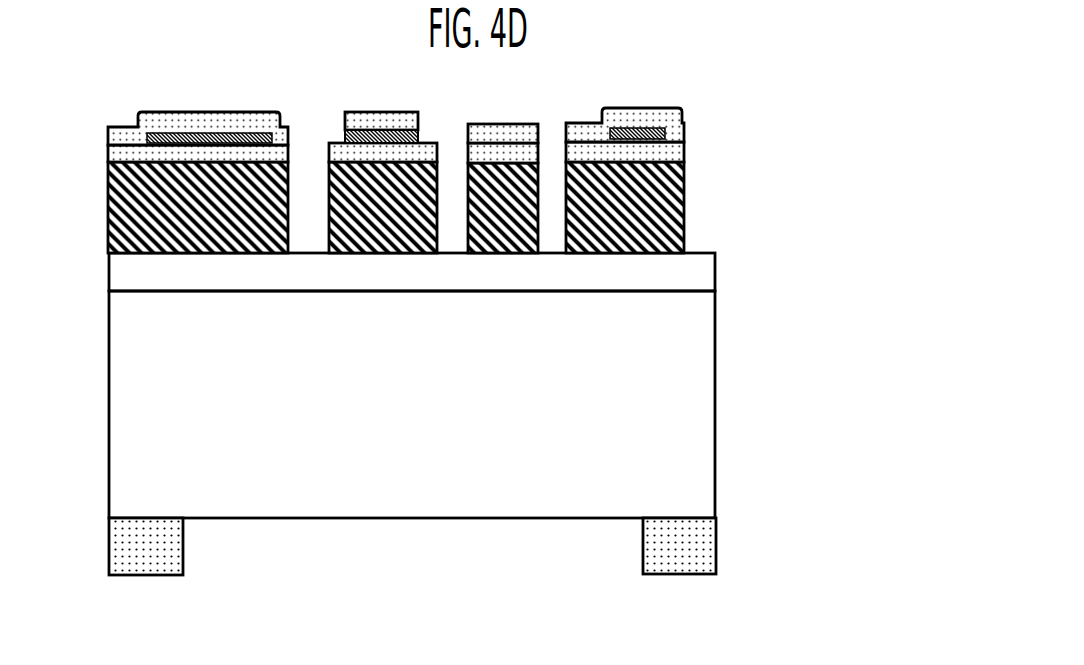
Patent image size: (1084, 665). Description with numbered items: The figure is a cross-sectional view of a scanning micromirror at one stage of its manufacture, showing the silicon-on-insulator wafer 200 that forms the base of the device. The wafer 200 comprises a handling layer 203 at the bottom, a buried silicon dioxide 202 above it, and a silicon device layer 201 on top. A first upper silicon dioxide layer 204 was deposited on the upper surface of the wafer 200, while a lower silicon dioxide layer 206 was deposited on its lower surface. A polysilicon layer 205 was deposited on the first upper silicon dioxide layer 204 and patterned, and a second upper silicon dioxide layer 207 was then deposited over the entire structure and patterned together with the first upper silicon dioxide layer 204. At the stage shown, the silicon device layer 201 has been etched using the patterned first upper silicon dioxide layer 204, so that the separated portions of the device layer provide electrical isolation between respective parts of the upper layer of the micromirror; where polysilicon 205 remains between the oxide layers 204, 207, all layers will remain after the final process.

The silicon-on-insulator (SOI) wafer 200 is at (513, 349).
The silicon device layer 201 is at (663, 212).
The buried silicon dioxide 202 is at (665, 267).
The handling layer 203 is at (668, 373).
The first upper silicon dioxide layer 204 is at (663, 152).
The polysilicon layer 205 is at (663, 132).
The lower silicon dioxide layer 206 is at (665, 543).
The second upper silicon dioxide layer 207 is at (658, 122).